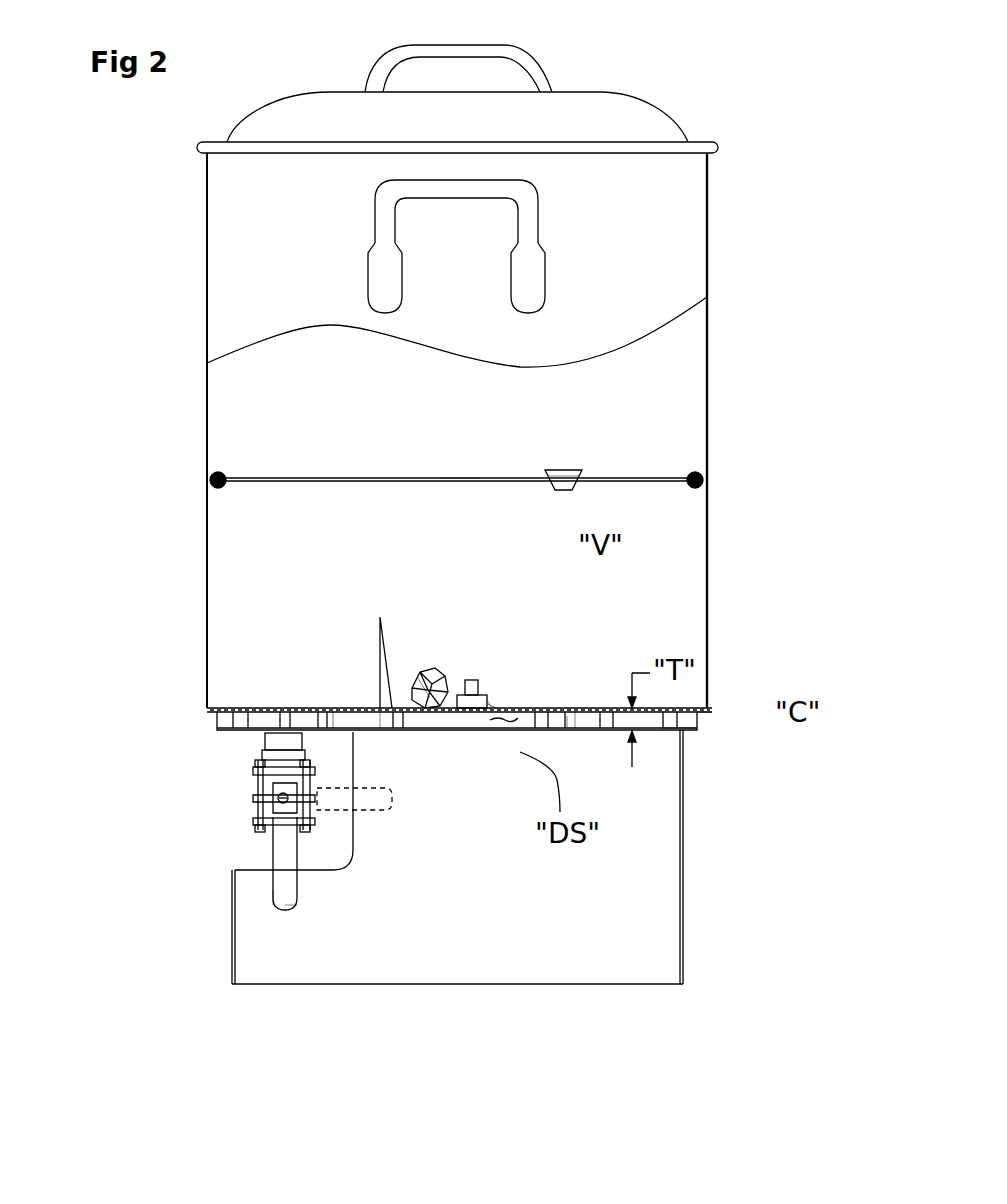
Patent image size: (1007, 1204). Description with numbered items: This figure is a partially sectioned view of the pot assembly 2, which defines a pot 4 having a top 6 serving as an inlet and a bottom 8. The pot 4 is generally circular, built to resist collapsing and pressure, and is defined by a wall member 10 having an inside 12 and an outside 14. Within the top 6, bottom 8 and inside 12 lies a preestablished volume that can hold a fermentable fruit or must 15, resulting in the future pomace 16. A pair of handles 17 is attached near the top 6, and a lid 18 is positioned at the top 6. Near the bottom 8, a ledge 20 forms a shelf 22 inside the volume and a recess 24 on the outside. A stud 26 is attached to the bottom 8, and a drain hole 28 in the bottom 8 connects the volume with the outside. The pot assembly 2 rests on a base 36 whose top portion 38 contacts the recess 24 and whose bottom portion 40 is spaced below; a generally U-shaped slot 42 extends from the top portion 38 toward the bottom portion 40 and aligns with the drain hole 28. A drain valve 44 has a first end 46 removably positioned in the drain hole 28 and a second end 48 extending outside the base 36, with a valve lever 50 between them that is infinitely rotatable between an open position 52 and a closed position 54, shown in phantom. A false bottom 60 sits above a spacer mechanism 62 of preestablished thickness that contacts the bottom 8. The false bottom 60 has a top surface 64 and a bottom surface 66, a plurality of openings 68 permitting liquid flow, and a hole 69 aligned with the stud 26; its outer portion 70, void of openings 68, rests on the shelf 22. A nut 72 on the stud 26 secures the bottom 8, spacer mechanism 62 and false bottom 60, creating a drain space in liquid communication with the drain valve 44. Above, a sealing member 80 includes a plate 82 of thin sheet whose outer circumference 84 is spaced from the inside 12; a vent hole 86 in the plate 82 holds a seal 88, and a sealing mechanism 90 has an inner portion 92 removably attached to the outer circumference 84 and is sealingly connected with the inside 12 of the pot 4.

The pot assembly 2 is at (162, 323).
The pot 4 is at (707, 330).
The top 6 is at (585, 142).
The bottom 8 is at (638, 733).
The wall member 10 is at (707, 525).
The inside 12 is at (707, 392).
The outside 14 is at (707, 415).
The fermentable fruit or must 15 is at (425, 667).
The pomace 16 is at (437, 673).
The handles 17 is at (527, 192).
The lid 18 is at (658, 103).
The ledge 20 is at (712, 705).
The shelf 22 is at (212, 722).
The recess 24 is at (693, 732).
The stud 26 is at (473, 680).
The drain hole 28 is at (290, 750).
The base 36 is at (230, 925).
The top portion 38 is at (683, 790).
The bottom portion 40 is at (230, 982).
The slot 42 is at (358, 847).
The drain valve 44 is at (253, 807).
The first end 46 is at (283, 733).
The second end 48 is at (297, 860).
The valve lever 50 is at (293, 908).
The open position 52 is at (268, 892).
The closed position 54 is at (393, 798).
The false bottom 60 is at (350, 708).
The spacer mechanism 62 is at (367, 735).
The top surface 64 is at (578, 707).
The bottom surface 66 is at (567, 718).
The openings 68 is at (371, 645).
The hole 69 is at (492, 707).
The outer portion 70 is at (715, 712).
The nut 72 is at (489, 707).
The sealing member 80 is at (368, 478).
The plate 82 is at (460, 478).
The outer circumference 84 is at (227, 477).
The vent hole 86 is at (578, 475).
The seal 88 is at (560, 470).
The sealing mechanism 90 is at (218, 470).
The inner portion 92 is at (227, 487).